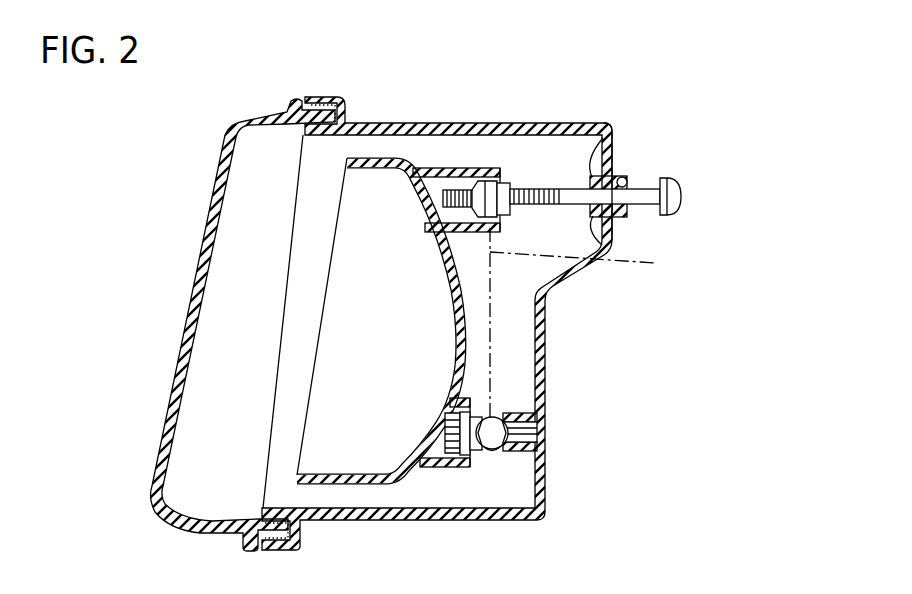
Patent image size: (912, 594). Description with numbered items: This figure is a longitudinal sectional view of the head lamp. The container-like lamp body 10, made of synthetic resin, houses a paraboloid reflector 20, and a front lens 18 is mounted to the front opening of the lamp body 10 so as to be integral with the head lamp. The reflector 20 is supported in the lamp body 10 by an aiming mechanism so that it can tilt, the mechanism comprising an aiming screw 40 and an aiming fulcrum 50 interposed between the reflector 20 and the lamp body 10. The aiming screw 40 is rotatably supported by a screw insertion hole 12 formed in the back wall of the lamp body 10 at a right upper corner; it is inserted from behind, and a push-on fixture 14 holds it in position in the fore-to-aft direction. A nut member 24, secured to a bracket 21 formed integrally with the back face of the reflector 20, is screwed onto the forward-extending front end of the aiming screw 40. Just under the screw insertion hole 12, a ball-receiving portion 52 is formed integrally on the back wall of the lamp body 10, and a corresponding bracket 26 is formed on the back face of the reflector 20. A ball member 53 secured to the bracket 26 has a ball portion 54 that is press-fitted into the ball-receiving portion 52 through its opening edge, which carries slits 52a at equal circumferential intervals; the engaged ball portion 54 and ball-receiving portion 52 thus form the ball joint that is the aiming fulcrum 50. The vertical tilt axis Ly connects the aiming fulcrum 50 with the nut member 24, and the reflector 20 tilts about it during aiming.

The lamp body 10 is at (548, 360).
The screw insertion hole 12 is at (632, 193).
The push-on fixture 14 is at (613, 133).
The front lens 18 is at (197, 268).
The reflector 20 is at (467, 325).
The bracket 21 is at (500, 182).
The nut member 24 is at (490, 185).
The bracket 26 is at (441, 468).
The aiming screw 40 is at (538, 178).
The aiming fulcrum 50 is at (632, 449).
The ball-receiving portion 52 is at (515, 413).
The slits 52a is at (494, 452).
The ball member 53 is at (540, 432).
The ball portion 54 is at (574, 441).
The vertical tilt axis Ly is at (591, 326).